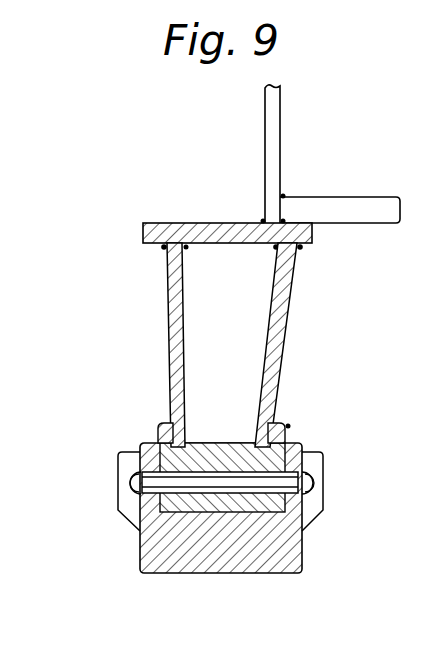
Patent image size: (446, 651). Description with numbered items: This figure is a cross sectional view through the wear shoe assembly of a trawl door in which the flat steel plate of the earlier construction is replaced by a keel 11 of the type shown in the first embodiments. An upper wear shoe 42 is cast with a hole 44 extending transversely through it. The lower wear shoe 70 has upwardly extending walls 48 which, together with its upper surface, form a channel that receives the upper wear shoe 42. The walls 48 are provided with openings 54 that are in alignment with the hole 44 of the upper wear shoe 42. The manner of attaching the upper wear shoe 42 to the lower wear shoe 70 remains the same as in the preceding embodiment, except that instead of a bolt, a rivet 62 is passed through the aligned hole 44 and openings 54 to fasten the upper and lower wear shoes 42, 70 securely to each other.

The keel 11 is at (160, 317).
The upper wear shoe 42 is at (230, 447).
The hole 44 is at (222, 486).
The upwardly extending walls 48 is at (152, 431).
The openings 54 is at (308, 483).
The rivet 62 is at (128, 485).
The lower wear shoe 70 is at (133, 559).